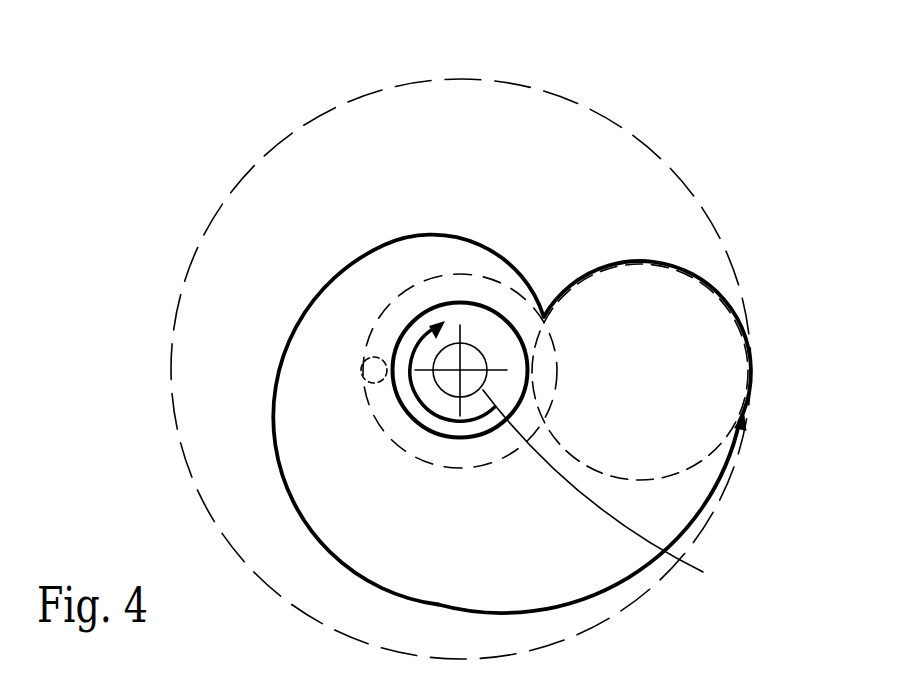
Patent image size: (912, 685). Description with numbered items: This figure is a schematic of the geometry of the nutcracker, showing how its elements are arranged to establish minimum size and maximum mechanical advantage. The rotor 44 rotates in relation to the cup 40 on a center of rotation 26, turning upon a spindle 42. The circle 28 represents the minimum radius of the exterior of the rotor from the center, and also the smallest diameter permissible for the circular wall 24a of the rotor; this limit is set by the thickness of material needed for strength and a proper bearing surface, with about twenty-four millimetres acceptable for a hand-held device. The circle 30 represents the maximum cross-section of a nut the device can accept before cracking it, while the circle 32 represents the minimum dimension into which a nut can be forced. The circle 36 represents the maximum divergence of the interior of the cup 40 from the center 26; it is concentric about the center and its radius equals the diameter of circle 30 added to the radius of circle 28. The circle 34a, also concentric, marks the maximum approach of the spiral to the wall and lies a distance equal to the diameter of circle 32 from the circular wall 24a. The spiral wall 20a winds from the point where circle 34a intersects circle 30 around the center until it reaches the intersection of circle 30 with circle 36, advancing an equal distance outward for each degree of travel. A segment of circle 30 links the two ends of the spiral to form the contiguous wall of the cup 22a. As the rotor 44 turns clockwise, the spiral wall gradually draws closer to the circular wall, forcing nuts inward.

The spiral wall 20a is at (460, 236).
The wall of the cup 22a is at (713, 288).
The circular wall 24a is at (460, 370).
The center of rotation 26 is at (430, 310).
The circle 28 is at (393, 337).
The circle 30 is at (733, 428).
The circle 32 is at (373, 383).
The circle 34a is at (390, 440).
The circle 36 is at (278, 595).
The cup 40 is at (600, 592).
The spindle 42 is at (703, 572).
The rotor 44 is at (483, 327).